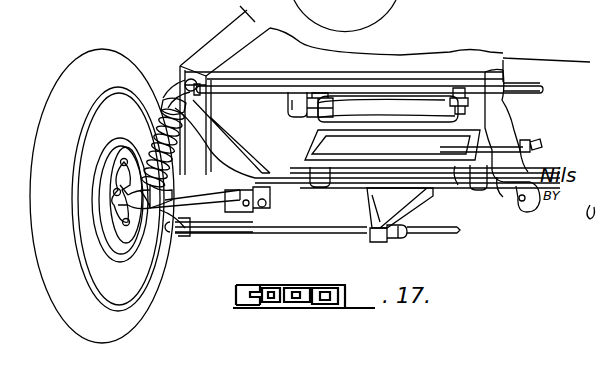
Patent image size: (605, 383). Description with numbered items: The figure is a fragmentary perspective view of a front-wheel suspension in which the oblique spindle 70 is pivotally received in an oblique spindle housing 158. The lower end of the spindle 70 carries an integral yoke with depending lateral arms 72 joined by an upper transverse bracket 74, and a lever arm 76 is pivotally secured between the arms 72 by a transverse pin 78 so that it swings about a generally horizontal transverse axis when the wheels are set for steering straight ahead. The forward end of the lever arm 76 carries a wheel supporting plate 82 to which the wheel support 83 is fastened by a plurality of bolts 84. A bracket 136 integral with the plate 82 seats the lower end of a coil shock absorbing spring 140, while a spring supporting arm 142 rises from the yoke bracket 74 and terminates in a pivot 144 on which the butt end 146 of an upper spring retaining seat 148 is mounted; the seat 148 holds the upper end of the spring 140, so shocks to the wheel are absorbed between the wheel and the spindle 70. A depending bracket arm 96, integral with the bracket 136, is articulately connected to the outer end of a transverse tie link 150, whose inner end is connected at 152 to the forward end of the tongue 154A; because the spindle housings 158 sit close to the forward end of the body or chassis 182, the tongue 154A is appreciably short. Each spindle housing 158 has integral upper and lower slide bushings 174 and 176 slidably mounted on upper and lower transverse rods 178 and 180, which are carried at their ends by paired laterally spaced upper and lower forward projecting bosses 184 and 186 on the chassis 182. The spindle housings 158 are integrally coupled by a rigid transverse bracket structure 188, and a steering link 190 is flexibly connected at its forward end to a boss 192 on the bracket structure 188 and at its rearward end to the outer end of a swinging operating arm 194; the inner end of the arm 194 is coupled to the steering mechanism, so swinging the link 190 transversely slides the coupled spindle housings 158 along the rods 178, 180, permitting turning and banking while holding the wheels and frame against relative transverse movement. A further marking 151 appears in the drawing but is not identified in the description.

The spindle 70 is at (528, 170).
The lateral arms 72 is at (272, 140).
The upper transverse bracket 74 is at (237, 173).
The lever arm 76 is at (222, 210).
The transverse pin 78 is at (268, 203).
The wheel supporting plate 82 is at (106, 246).
The wheel support 83 is at (108, 168).
The bolts 84 is at (115, 195).
The depending bracket arm 96 is at (180, 240).
The bracket 136 is at (128, 250).
The coil shock absorbing spring 140 is at (160, 130).
The spring supporting arm 142 is at (285, 94).
The pivot 144 is at (150, 95).
The butt end 146 is at (172, 92).
The upper spring retaining seat 148 is at (160, 115).
The transverse tie link 150 is at (292, 240).
The tag 151 is at (412, 130).
The inner end connection 152 is at (362, 240).
The tongue 154A is at (400, 204).
The spindle housing 158 is at (200, 226).
The upper slide bushing 174 is at (522, 75).
The lower slide bushing 176 is at (316, 187).
The upper transverse rod 178 is at (386, 86).
The lower transverse rod 180 is at (455, 190).
The vehicle chassis 182 is at (252, 9).
The upper forward projecting bosses 184 is at (225, 43).
The lower forward projecting bosses 186 is at (305, 120).
The rigid transverse bracket structure 188 is at (390, 148).
The steering link 190 is at (518, 130).
The boss 192 is at (423, 130).
The swinging operating arm 194 is at (545, 141).